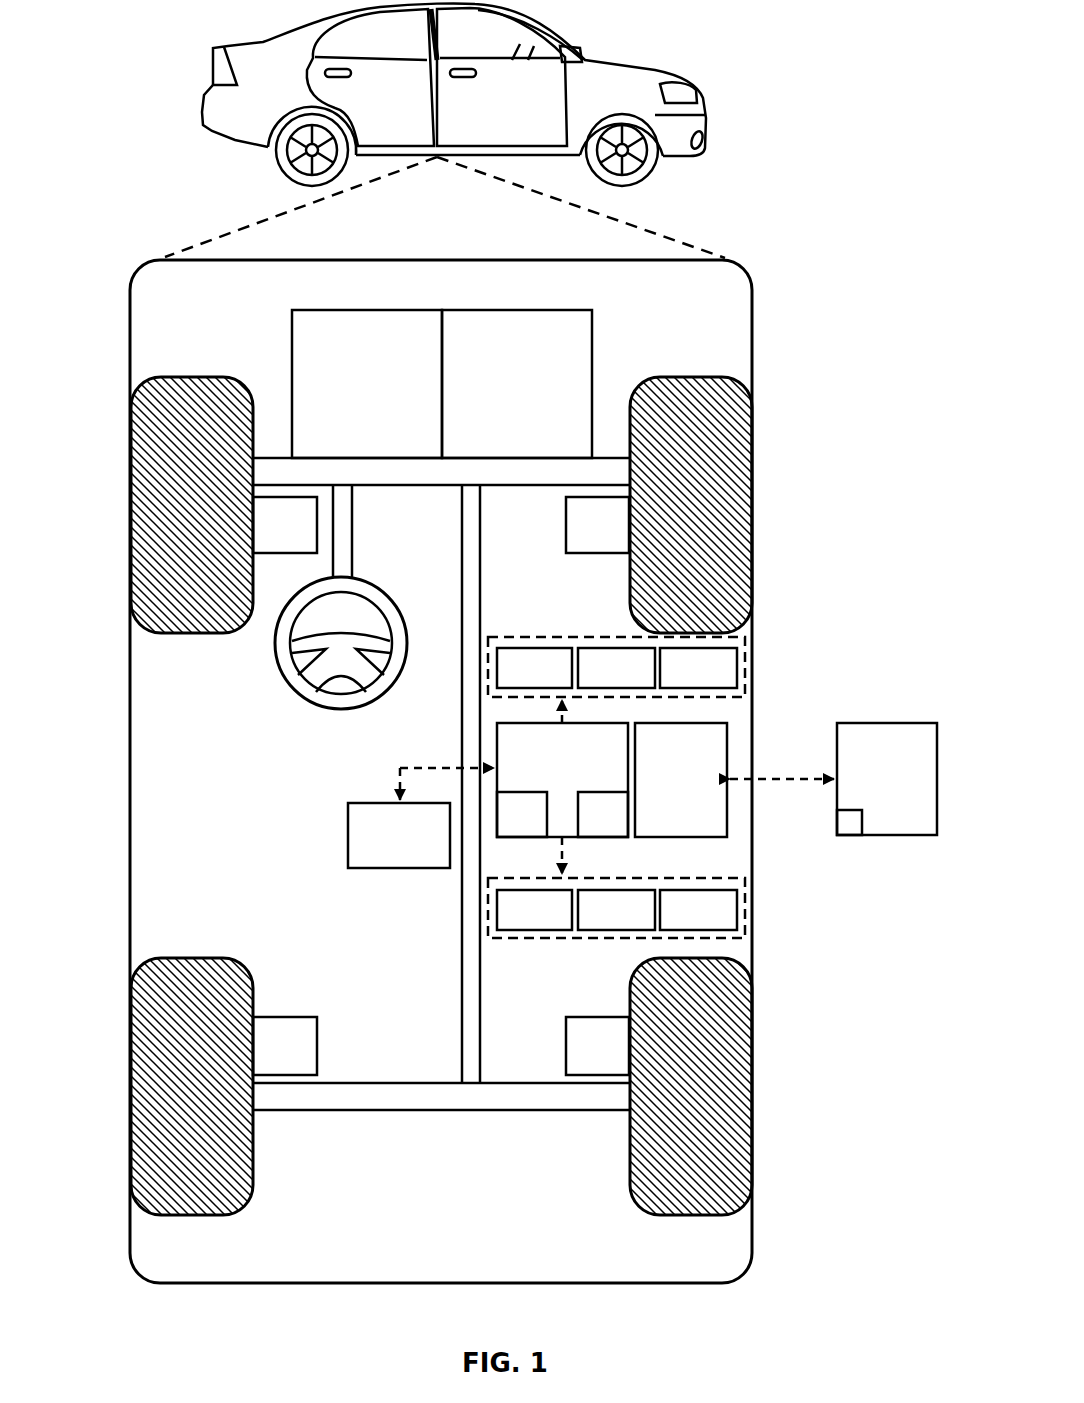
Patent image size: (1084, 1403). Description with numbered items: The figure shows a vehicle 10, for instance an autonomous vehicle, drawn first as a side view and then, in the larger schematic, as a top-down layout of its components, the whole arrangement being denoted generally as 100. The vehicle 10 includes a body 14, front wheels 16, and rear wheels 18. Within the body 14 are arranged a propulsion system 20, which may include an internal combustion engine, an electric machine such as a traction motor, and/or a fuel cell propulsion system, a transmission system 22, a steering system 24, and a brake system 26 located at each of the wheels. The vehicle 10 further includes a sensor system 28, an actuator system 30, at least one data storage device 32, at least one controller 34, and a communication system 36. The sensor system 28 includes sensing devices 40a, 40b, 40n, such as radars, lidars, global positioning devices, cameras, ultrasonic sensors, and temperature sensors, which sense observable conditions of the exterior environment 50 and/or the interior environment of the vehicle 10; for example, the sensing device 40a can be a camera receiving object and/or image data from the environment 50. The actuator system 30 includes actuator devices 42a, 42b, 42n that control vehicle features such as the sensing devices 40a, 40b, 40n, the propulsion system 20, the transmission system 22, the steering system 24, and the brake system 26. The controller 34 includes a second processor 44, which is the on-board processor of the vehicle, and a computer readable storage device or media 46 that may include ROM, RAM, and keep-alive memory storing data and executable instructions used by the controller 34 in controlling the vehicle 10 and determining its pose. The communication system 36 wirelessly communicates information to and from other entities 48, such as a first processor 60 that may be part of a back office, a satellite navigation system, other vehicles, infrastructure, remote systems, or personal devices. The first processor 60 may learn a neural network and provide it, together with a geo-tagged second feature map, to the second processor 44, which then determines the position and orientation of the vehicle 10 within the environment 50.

The vehicle 10 is at (210, 78).
The vehicle system 100 is at (778, 250).
The body 14 is at (130, 728).
The front wheels 16 is at (192, 377).
The rear wheels 18 is at (193, 1215).
The propulsion system 20 is at (352, 398).
The transmission system 22 is at (502, 398).
The steering system 24 is at (358, 549).
The brake system 26 is at (271, 540).
The sensor system 28 is at (577, 637).
The actuator system 30 is at (578, 940).
The data storage device 32 is at (385, 851).
The controller 34 is at (548, 772).
The communication system 36 is at (667, 795).
The sensing device 40a is at (513, 683).
The sensing device 40b is at (595, 683).
The sensing device 40n is at (677, 683).
The actuator device 42a is at (513, 925).
The actuator device 42b is at (595, 925).
The actuator device 42n is at (677, 925).
The second processor 44 is at (508, 829).
The computer readable storage device or media 46 is at (589, 829).
The other entities 48 is at (873, 795).
The exterior environment 50 is at (823, 508).
The first processor 60 is at (850, 823).